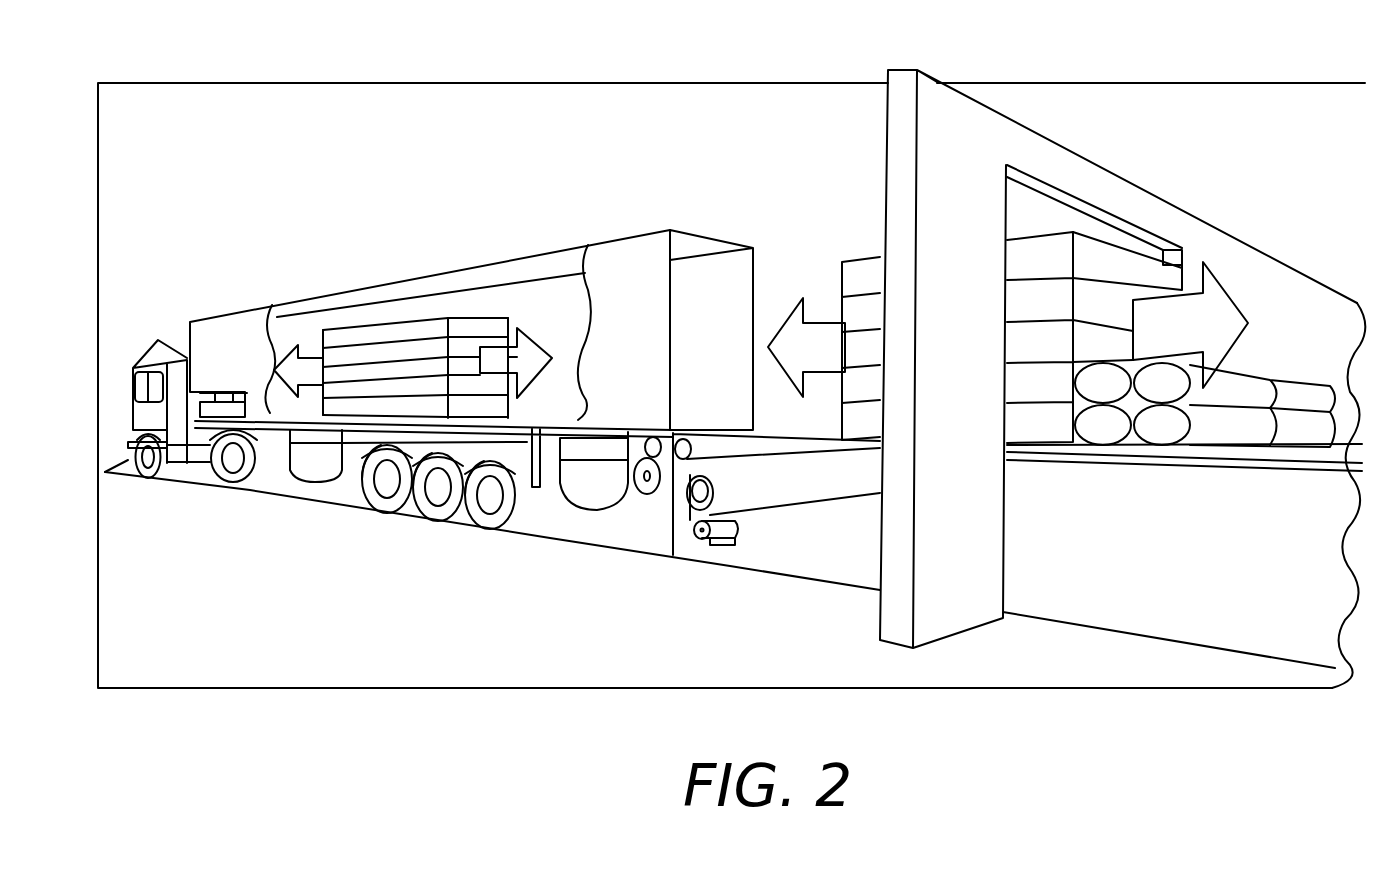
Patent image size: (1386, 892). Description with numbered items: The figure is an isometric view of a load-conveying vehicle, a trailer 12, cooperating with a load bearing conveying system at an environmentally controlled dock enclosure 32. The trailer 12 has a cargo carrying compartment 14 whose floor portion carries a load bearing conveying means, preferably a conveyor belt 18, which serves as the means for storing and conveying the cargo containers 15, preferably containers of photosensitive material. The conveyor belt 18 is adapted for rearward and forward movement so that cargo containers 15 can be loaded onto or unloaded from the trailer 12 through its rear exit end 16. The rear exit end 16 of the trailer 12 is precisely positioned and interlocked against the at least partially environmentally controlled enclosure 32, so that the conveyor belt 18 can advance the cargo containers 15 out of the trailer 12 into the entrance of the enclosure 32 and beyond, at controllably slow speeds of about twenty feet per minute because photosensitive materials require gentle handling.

The trailer 12 is at (378, 285).
The cargo carrying compartment 14 is at (705, 278).
The cargo containers 15 is at (502, 305).
The rear exit end 16 is at (762, 307).
The conveyor belt 18 is at (601, 418).
The environmentally controlled enclosure 32 is at (1203, 112).